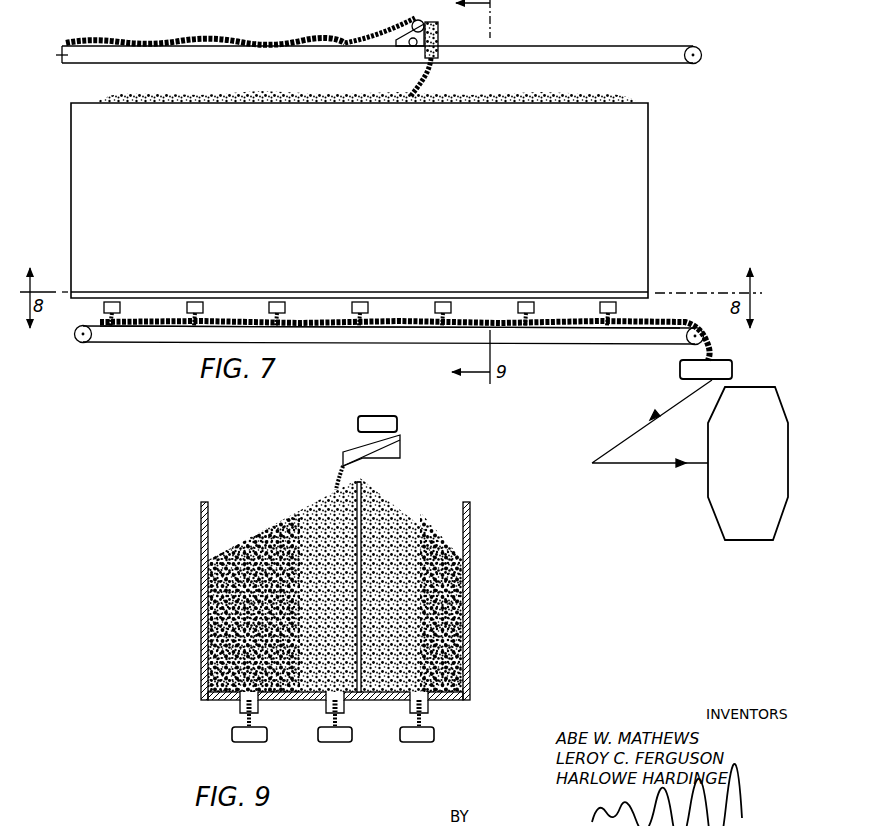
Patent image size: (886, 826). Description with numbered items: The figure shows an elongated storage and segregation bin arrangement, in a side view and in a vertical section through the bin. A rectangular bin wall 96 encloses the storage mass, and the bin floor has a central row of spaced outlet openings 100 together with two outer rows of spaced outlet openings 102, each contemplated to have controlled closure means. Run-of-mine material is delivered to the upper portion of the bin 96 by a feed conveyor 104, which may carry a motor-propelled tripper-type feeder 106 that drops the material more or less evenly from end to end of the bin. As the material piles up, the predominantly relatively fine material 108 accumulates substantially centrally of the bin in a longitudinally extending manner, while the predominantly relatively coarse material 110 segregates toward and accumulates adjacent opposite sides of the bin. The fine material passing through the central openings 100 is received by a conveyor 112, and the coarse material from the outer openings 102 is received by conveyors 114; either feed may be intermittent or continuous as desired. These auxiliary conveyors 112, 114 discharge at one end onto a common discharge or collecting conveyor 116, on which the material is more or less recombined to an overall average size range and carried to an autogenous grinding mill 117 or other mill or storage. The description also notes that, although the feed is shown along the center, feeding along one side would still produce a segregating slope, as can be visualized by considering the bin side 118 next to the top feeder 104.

In FIG. 7, the rectangular bin wall 96 is at (648, 168).
In FIG. 9, the rectangular bin wall 96 is at (470, 535).
In FIG. 7, the central row of spaced outlet openings 100 is at (277, 302).
In FIG. 9, the central row of spaced outlet openings 100 is at (326, 707).
In FIG. 7, the outer rows of spaced outlet openings 102 is at (360, 301).
In FIG. 9, the outer rows of spaced outlet openings 102 is at (242, 704).
In FIG. 7, the feed conveyor 104 is at (580, 46).
In FIG. 9, the feed conveyor 104 is at (368, 418).
In FIG. 7, the tripper-type feeder 106 is at (433, 30).
In FIG. 9, the relatively fine material 108 is at (340, 543).
In FIG. 9, the coarse material layer 110 is at (252, 548).
In FIG. 7, the conveyor 112 is at (580, 395).
In FIG. 9, the conveyor 112 is at (342, 737).
In FIG. 7, the conveyors 114 is at (390, 359).
In FIG. 9, the conveyors 114 is at (258, 737).
In FIG. 7, the common discharge or collecting conveyor 116 is at (713, 374).
In FIG. 7, the autogenous grinding mill 117 is at (778, 412).
In FIG. 9, the side 118 is at (362, 483).